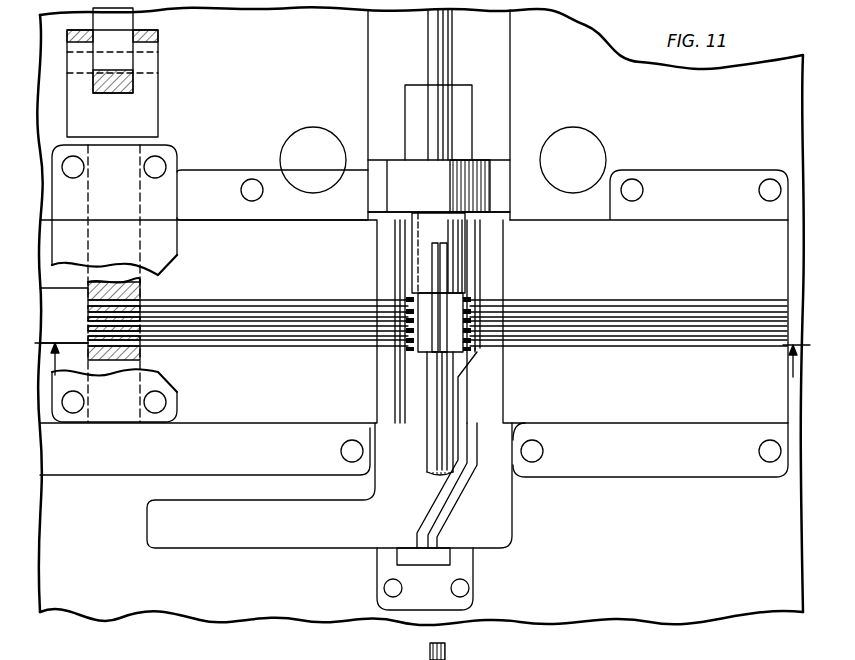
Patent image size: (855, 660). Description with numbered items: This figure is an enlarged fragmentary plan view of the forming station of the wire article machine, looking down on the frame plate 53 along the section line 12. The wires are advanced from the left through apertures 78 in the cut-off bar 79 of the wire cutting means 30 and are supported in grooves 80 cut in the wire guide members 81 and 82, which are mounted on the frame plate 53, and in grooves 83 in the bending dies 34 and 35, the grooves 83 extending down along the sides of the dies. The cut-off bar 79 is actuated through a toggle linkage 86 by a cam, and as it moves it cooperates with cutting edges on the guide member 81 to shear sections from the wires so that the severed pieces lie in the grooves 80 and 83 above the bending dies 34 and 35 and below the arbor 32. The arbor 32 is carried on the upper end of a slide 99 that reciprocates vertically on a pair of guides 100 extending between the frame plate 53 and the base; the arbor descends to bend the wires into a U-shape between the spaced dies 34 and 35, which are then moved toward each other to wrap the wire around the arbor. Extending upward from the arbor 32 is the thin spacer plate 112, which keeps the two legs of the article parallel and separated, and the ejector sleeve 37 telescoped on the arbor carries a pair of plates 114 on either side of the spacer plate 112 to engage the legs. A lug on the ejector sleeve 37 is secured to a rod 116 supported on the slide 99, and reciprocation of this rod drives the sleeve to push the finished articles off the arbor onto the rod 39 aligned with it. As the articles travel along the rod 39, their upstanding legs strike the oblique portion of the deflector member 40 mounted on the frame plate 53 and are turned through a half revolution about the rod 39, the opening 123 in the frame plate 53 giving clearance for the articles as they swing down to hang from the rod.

The section line 12 is at (422, 360).
The wire cutting means 30 is at (190, 154).
The arbor 32 is at (425, 352).
The bending die 34 is at (390, 393).
The bending die 35 is at (490, 380).
The ejector sleeve 37 is at (414, 245).
The rod 39 is at (432, 458).
The deflector member 40 is at (448, 492).
The frame plate 53 is at (245, 595).
The apertures 78 is at (109, 292).
The cut-off bar 79 is at (123, 275).
The grooves 80 is at (272, 345).
The wire guide member 81 is at (258, 410).
The wire guide member 82 is at (652, 400).
The grooves 83 is at (392, 318).
The toggle linkage 86 is at (118, 18).
The slide 99 is at (452, 175).
The guides 100 is at (312, 150).
The spacer plate 112 is at (448, 300).
The plates 114 is at (440, 250).
The rod 116 is at (452, 62).
The opening 123 is at (217, 538).